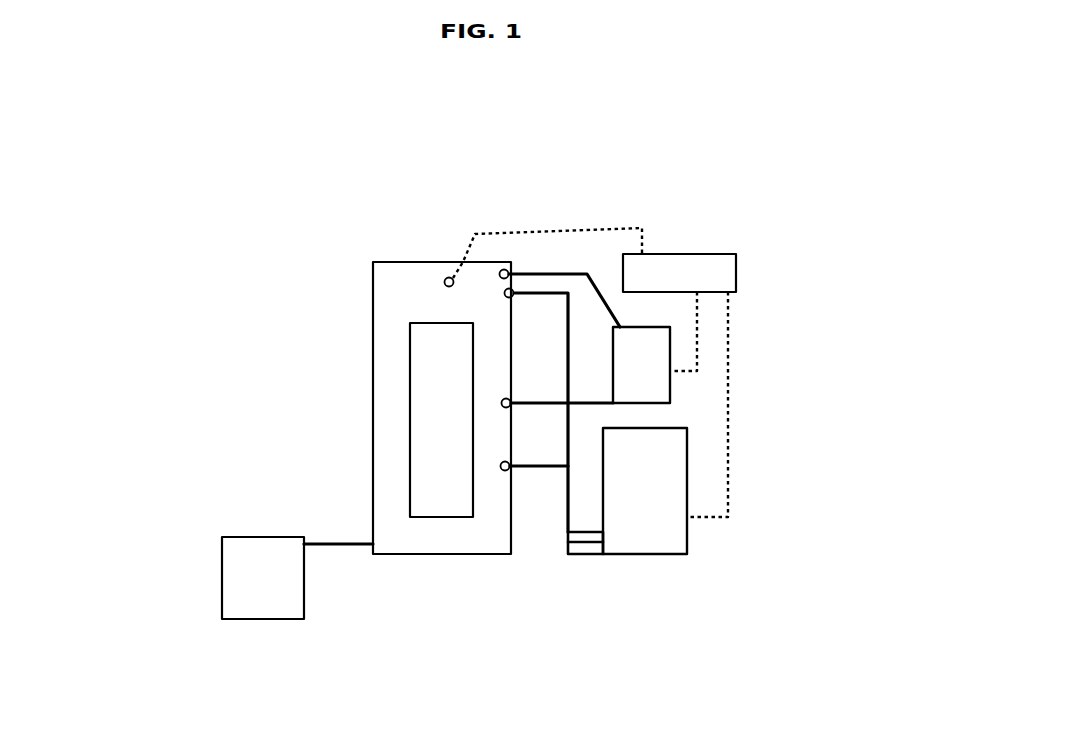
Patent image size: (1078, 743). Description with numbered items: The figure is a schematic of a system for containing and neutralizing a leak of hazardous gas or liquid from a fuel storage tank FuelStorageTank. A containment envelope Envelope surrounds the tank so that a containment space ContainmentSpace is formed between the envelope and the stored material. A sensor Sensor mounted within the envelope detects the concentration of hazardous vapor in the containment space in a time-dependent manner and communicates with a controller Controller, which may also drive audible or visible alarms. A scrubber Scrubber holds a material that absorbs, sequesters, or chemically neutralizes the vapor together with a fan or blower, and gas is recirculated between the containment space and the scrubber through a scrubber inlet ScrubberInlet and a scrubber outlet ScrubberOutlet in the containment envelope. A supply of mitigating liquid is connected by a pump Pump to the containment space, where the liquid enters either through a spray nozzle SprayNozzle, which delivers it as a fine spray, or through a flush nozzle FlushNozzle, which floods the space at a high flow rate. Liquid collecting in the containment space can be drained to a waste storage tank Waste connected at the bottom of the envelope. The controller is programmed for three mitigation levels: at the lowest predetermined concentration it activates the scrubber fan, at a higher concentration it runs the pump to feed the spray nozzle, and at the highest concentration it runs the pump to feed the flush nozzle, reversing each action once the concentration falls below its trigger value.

The containment envelope Envelope is at (370, 283).
The fuel storage tank FuelStorageTank is at (425, 416).
The containment space ContainmentSpace is at (387, 475).
The sensor Sensor is at (446, 277).
The scrubber inlet ScrubberInlet is at (508, 270).
The spray nozzle SprayNozzle is at (506, 298).
The scrubber outlet ScrubberOutlet is at (508, 408).
The flush nozzle FlushNozzle is at (504, 471).
The pump Pump is at (592, 550).
The scrubber Scrubber is at (658, 392).
The controller Controller is at (728, 260).
The waste storage tank Waste is at (243, 557).